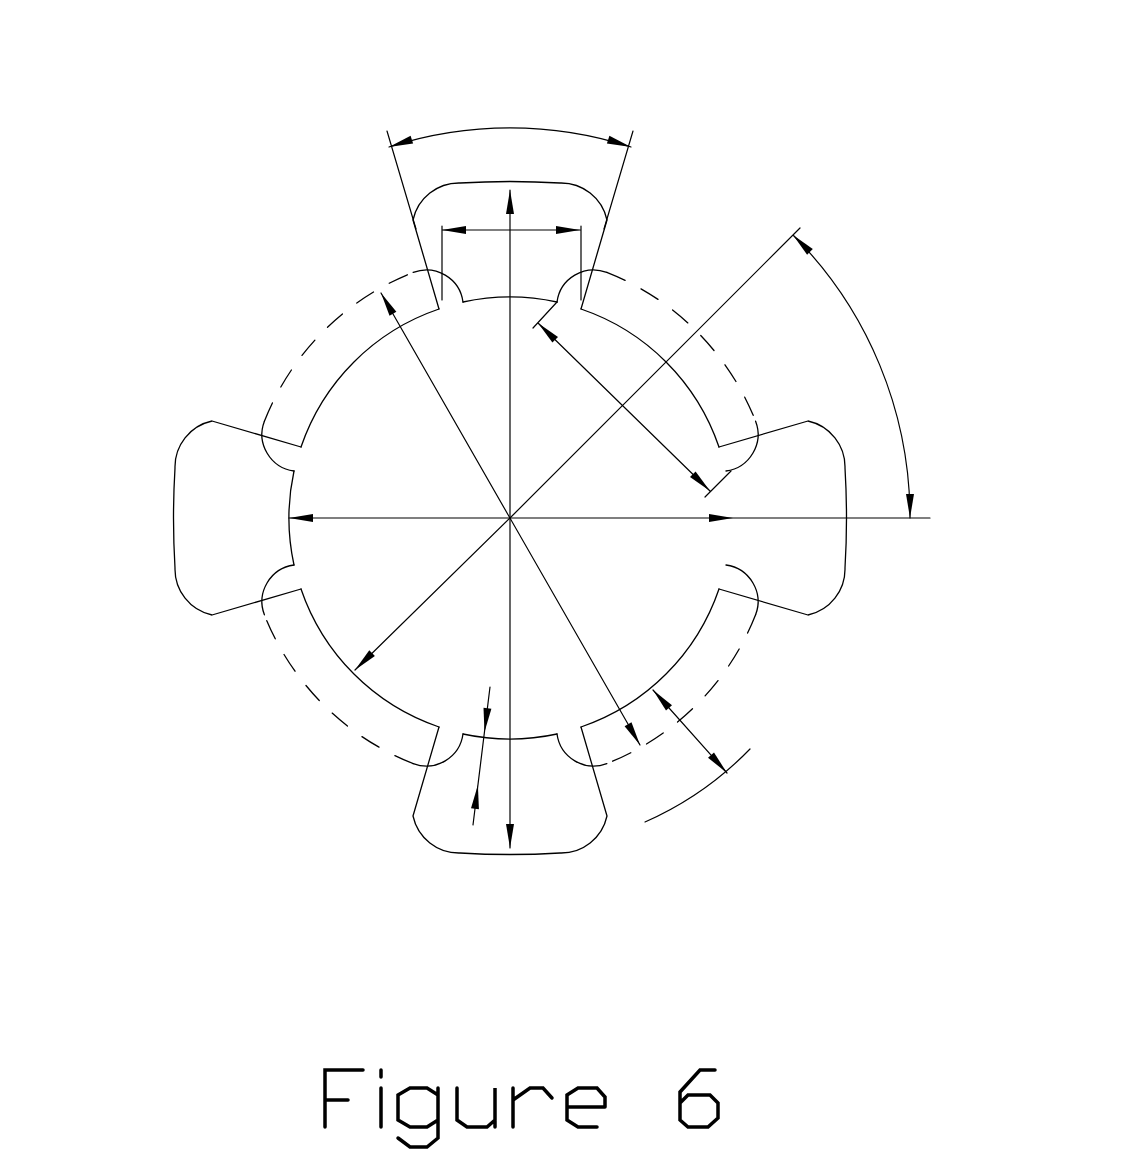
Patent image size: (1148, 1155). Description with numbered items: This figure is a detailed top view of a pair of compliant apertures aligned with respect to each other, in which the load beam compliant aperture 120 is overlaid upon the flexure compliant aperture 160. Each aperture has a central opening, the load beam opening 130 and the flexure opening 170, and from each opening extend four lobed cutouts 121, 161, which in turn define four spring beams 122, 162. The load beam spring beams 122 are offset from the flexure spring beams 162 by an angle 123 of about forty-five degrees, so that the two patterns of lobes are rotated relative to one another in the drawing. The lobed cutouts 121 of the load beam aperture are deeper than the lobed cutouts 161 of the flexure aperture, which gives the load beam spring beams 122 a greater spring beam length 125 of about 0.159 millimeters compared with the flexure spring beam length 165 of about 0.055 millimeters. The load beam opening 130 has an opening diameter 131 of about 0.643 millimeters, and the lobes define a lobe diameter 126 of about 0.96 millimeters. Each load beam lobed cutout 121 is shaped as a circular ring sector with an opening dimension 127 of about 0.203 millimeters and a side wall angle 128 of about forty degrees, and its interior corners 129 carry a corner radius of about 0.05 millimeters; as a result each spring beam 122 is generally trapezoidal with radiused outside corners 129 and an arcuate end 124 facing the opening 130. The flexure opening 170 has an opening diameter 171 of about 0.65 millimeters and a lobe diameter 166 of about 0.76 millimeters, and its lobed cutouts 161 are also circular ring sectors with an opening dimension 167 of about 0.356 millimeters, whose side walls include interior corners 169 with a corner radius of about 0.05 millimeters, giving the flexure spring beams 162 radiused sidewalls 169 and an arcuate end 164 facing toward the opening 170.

The load beam compliant aperture 120 is at (713, 608).
The lobed cutouts 121 is at (425, 810).
The load beam spring beams 122 is at (712, 653).
The angle 123 is at (890, 378).
The arcuate end 124 is at (603, 710).
The spring beam length 125 is at (688, 727).
The lobe diameter 126 is at (505, 636).
The opening dimension 127 is at (582, 230).
The side wall angle 128 is at (513, 126).
The interior corners 129 is at (194, 427).
The load beam opening 130 is at (352, 630).
The opening diameter 131 is at (430, 590).
The flexure compliant aperture 160 is at (543, 740).
The lobed cutouts 161 is at (282, 583).
The flexure spring beams 162 is at (285, 540).
The arcuate end 164 is at (298, 471).
The spring beam length 165 is at (483, 758).
The lobe diameter 166 is at (567, 608).
The opening dimension 167 is at (640, 420).
The interior corners 169 is at (452, 758).
The flexure opening 170 is at (365, 381).
The opening diameter 171 is at (610, 520).